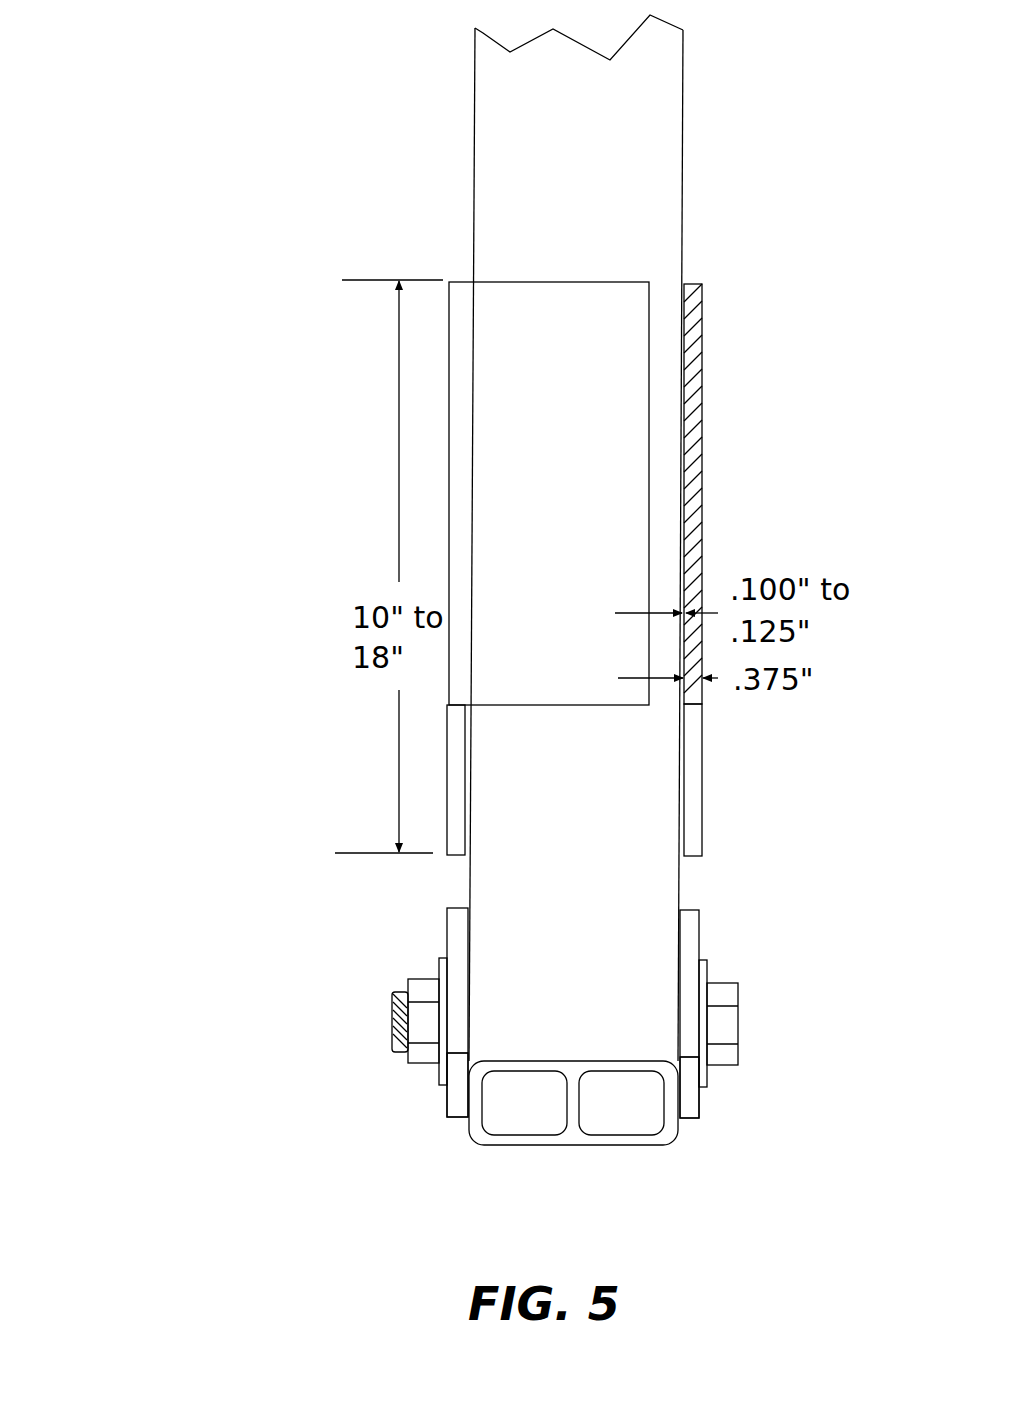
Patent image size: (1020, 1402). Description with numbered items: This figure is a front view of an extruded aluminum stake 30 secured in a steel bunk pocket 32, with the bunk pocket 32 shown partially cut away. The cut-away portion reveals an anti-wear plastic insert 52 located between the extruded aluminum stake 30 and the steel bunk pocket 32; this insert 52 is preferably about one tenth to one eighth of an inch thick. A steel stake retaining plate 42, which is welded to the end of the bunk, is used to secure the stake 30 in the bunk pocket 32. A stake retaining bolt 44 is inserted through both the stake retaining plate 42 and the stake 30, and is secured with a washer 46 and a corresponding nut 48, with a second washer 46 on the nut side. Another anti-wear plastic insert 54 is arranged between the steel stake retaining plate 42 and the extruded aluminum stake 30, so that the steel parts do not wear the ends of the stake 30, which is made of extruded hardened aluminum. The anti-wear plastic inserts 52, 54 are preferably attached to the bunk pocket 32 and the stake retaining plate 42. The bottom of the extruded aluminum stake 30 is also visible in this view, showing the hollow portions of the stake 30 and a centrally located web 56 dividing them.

The stake 30 is at (473, 146).
The bunk pocket 32 is at (447, 486).
The stake retaining plate 42 is at (449, 945).
The bolt 44 is at (389, 1041).
The washer 46 is at (404, 1062).
The nut 48 is at (434, 1089).
The anti-wear plastic insert 52 is at (683, 279).
The anti-wear plastic insert 54 is at (461, 1121).
The web 56 is at (583, 1120).